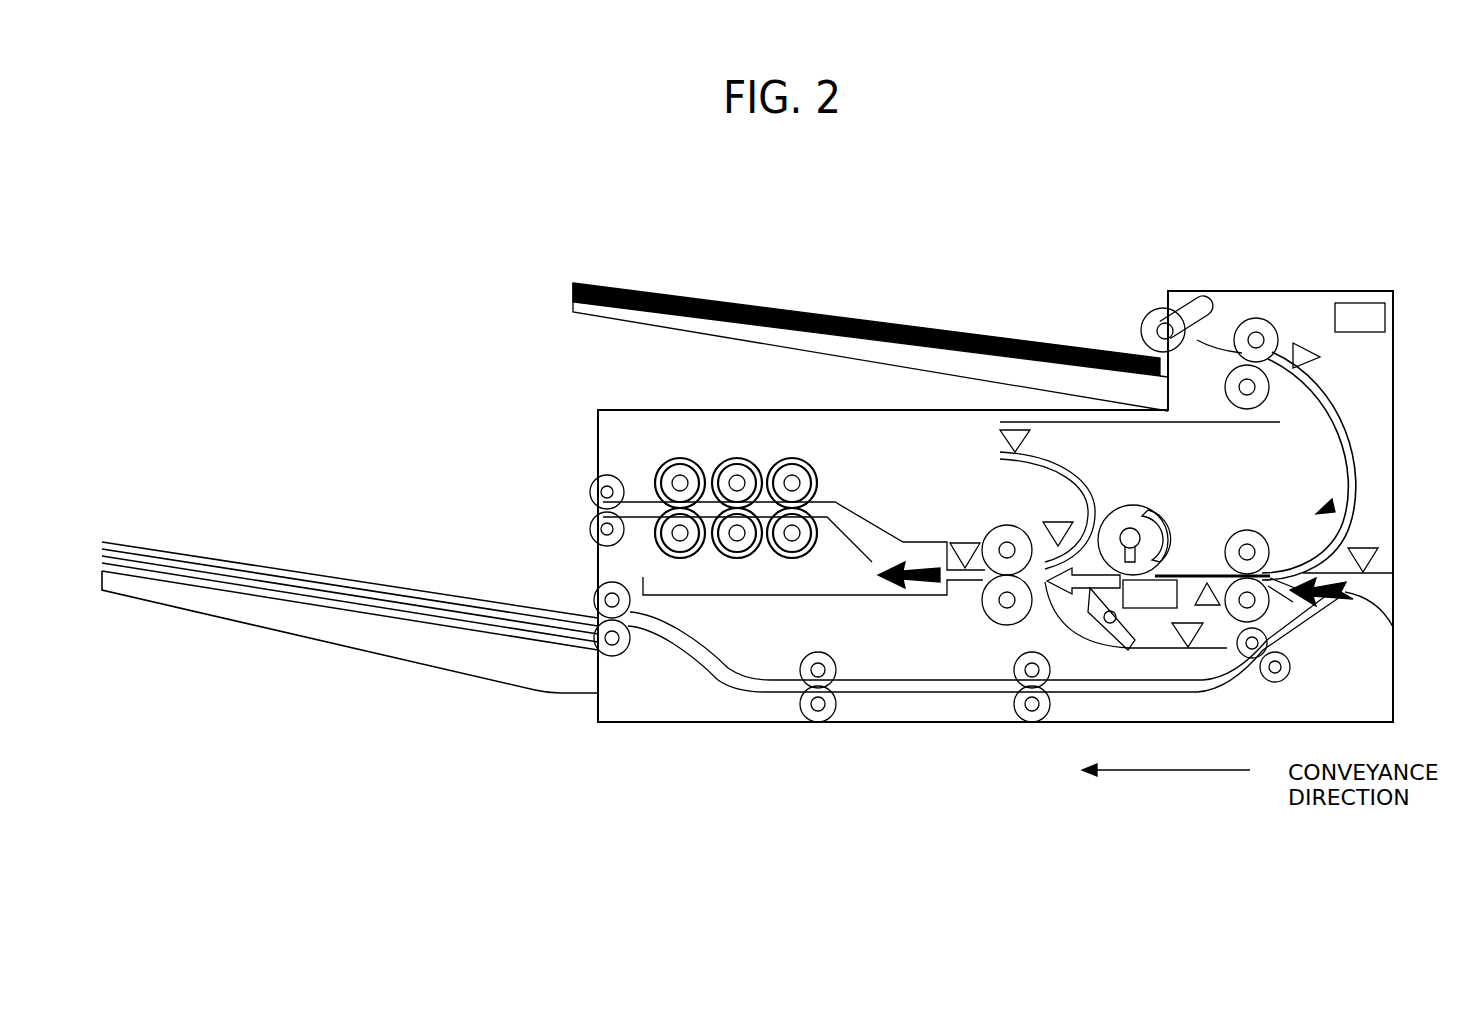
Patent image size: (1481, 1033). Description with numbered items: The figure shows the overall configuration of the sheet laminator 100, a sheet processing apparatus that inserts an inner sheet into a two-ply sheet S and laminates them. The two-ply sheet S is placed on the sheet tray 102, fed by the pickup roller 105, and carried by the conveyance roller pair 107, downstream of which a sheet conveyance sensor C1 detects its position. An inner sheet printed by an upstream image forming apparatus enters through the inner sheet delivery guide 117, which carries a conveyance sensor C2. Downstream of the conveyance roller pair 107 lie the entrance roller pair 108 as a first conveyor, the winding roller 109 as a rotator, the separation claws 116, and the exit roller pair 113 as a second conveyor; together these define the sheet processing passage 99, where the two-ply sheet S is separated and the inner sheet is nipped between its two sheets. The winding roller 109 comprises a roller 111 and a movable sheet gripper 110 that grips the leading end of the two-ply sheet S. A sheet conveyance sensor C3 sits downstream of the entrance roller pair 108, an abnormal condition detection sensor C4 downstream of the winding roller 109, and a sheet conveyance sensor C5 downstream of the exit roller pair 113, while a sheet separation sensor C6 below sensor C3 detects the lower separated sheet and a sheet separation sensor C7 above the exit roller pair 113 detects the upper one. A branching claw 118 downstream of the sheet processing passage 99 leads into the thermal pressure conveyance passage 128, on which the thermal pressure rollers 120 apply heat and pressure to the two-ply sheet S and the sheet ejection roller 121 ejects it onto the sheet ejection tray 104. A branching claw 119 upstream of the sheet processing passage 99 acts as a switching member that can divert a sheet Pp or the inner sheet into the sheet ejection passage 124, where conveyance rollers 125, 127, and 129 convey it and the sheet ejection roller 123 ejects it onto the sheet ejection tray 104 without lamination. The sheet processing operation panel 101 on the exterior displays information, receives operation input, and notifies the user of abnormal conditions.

The sheet laminator 100 is at (1303, 234).
The sheet processing operation panel 101 is at (1365, 300).
The sheet tray 102 is at (708, 340).
The sheet ejection tray 104 is at (342, 651).
The pickup roller 105 is at (1160, 312).
The conveyance roller pair 107 is at (1248, 318).
The entrance roller pair 108 is at (1250, 530).
The winding roller 109 is at (1145, 503).
The sheet gripper 110 is at (1175, 498).
The roller 111 is at (1118, 517).
The exit roller pair 113 is at (1003, 524).
The separation claws 116 is at (1073, 607).
The inner sheet delivery guide 117 is at (1393, 573).
The branching claw 118 is at (897, 590).
The branching claw 119 is at (1393, 628).
The thermal pressure rollers 120 is at (812, 458).
The sheet ejection roller 121 is at (598, 485).
The sheet ejection roller 123 is at (623, 658).
The sheet ejection passage 124 is at (1322, 605).
The conveyance roller 125 is at (1285, 680).
The conveyance roller 127 is at (1020, 720).
The thermal pressure conveyance passage 128 is at (856, 546).
The conveyance roller 129 is at (806, 720).
The sheet processing passage 99 is at (1188, 420).
The two-ply sheet S is at (660, 290).
The sheet Pp is at (338, 577).
The sheet conveyance sensor C1 is at (1306, 345).
The conveyance sensor C2 is at (1366, 546).
The sheet conveyance sensor C3 is at (1188, 573).
The abnormal condition detection sensor C4 is at (1052, 520).
The sheet conveyance sensor C5 is at (961, 542).
The sheet separation sensor C6 is at (1178, 648).
The sheet separation sensor C7 is at (1035, 440).